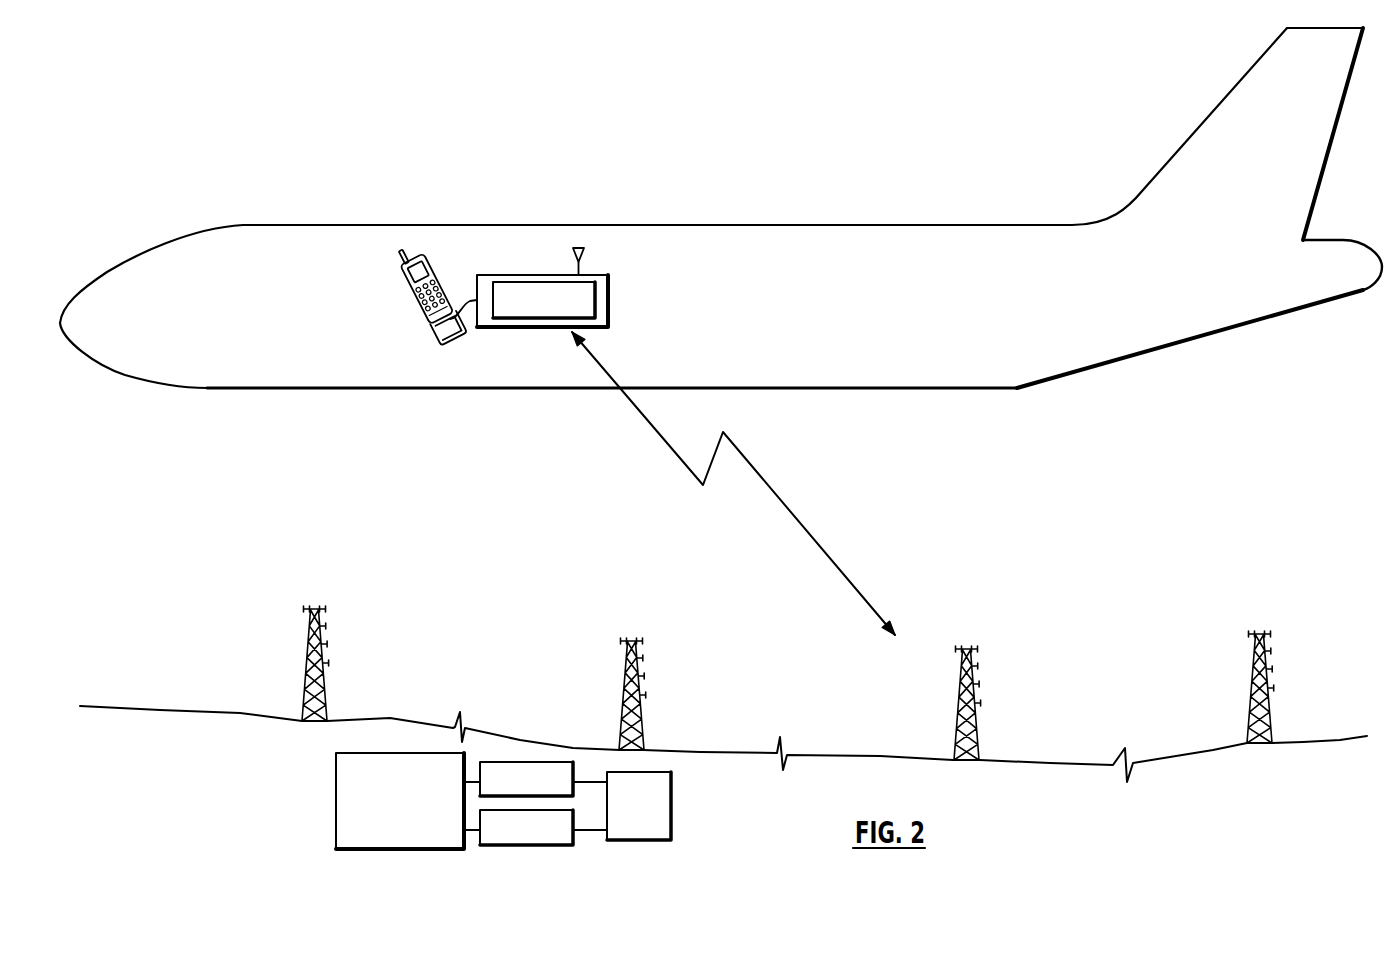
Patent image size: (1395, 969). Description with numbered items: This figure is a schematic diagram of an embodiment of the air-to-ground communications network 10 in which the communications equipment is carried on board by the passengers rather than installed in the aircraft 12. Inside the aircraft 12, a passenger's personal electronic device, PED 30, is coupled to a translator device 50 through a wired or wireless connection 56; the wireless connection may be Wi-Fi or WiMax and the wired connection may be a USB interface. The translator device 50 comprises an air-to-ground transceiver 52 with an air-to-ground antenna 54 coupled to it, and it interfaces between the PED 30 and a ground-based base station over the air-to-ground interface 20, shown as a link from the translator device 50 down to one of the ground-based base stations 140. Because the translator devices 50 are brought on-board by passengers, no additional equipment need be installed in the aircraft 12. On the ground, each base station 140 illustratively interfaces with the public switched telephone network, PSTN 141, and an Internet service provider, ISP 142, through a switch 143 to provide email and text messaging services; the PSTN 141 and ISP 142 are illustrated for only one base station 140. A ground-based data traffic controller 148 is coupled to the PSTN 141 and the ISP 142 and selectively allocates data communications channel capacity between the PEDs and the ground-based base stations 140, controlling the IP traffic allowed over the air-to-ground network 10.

The air-to-ground communication system 10 is at (318, 151).
The aircraft 12 is at (1191, 127).
The air-to-ground interface 20 is at (796, 516).
The PED 30 is at (407, 276).
The translator device 50 is at (608, 292).
The air-to-ground transceiver 52 is at (492, 308).
The air-to-ground antenna 54 is at (586, 256).
The connection between mobile telephone and transceiver 56 is at (462, 300).
The ground-based base stations 140 is at (305, 668).
The public switched telephone network (PSTN) 141 is at (521, 761).
The Internet service provider (ISP) 142 is at (527, 846).
The switch 143 is at (672, 795).
The ground-based data traffic controller 148 is at (336, 801).